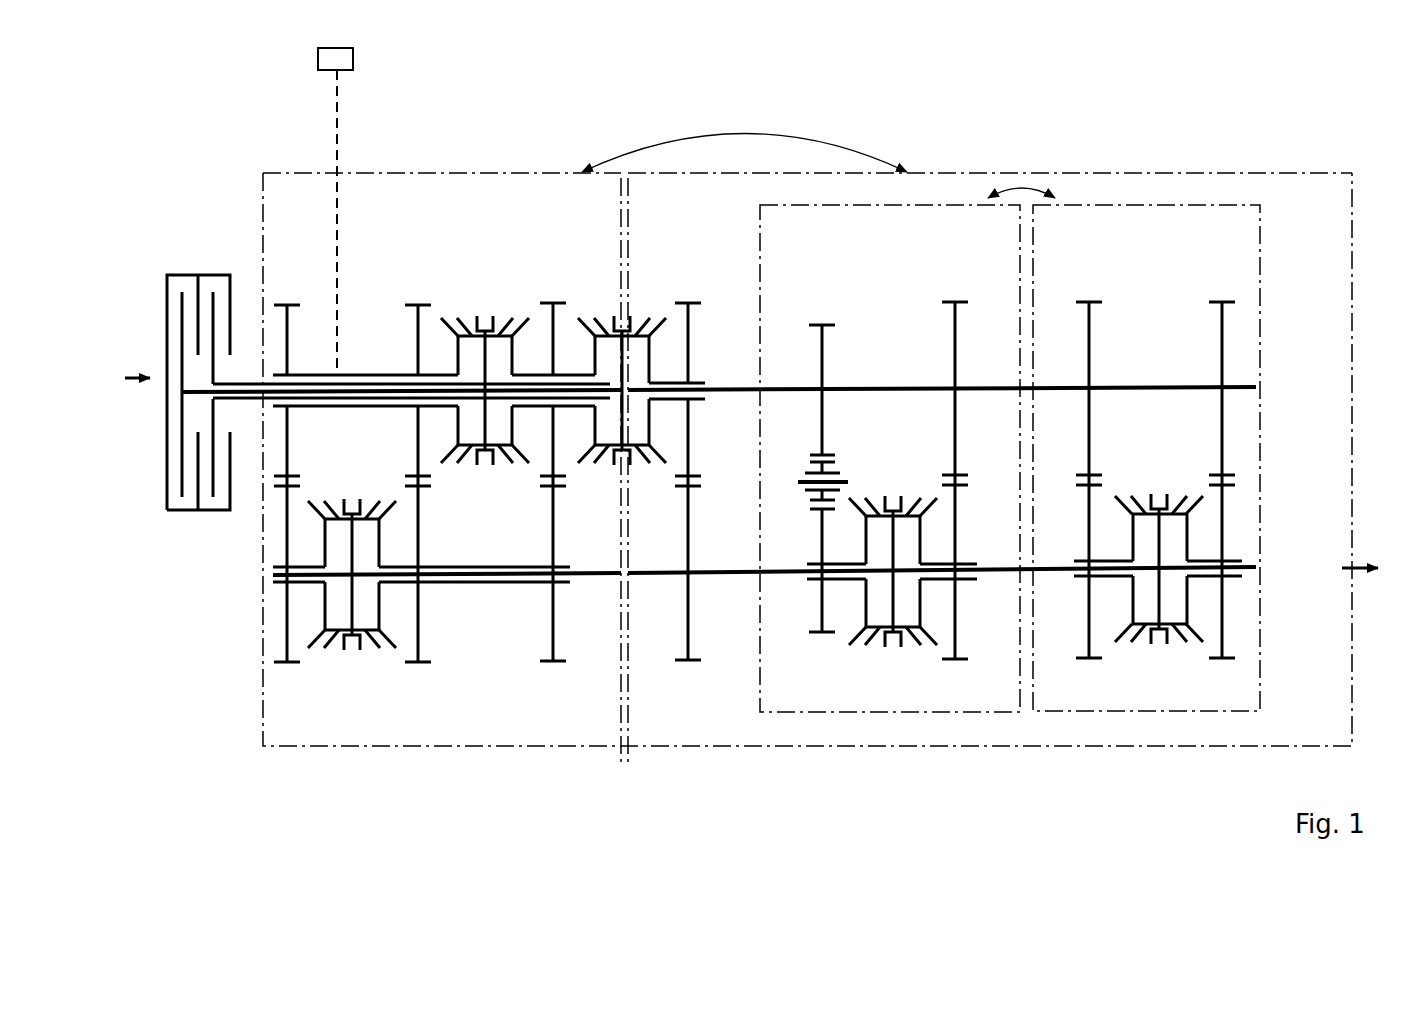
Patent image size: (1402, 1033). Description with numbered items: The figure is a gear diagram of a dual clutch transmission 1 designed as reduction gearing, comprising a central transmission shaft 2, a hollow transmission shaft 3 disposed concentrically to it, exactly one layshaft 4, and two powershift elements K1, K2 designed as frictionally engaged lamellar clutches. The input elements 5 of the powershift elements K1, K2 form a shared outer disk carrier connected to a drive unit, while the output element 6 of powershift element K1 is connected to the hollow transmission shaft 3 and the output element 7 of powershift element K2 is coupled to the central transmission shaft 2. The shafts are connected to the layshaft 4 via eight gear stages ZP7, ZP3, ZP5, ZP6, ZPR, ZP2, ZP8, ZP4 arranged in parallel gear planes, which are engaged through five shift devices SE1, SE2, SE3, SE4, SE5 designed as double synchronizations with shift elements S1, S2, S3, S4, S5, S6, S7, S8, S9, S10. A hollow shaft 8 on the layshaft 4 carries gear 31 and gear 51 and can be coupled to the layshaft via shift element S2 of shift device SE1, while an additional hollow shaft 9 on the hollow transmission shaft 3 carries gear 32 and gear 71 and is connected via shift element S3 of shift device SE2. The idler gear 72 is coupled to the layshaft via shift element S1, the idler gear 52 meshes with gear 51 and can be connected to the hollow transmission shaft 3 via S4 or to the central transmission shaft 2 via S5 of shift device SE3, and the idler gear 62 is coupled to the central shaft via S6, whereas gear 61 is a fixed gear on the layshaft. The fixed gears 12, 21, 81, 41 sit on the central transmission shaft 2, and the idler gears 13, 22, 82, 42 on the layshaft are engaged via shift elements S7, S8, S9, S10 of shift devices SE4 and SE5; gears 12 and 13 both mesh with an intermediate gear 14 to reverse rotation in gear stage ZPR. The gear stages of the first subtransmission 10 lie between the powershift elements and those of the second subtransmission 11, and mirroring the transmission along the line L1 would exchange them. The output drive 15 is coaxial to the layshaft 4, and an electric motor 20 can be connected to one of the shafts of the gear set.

The dual clutch transmission 1 is at (180, 165).
The central transmission shaft 2 is at (887, 386).
The hollow transmission shaft 3 is at (346, 388).
The layshaft 4 is at (735, 578).
The input elements of the powershift elements 5 is at (178, 512).
The output element of powershift element K1 6 is at (217, 297).
The output element of powershift element K2 7 is at (167, 297).
The hollow shaft 8 is at (492, 585).
The additional hollow shaft 9 is at (369, 381).
The first subtransmission 10 is at (448, 172).
The second subtransmission 11 is at (642, 172).
The gear of the gear stage ZPR 12 is at (813, 323).
The gear of the gear stage ZPR 13 is at (821, 635).
The intermediate gear 14 is at (836, 455).
The output drive 15 is at (1352, 563).
The electric motor 20 is at (355, 62).
The gear of the gear stage ZP2 21 is at (948, 302).
The gear of the gear stage ZP2 22 is at (965, 662).
The gear of the gear stage ZP3 31 is at (424, 665).
The additional gear of the gear stage ZP3 32 is at (410, 302).
The gear of the gear stage ZP4 41 is at (1233, 302).
The gear of the gear stage ZP4 42 is at (1233, 661).
The gear of the gear stage ZP5 51 is at (551, 664).
The second gear of the gear stage ZP5 52 is at (549, 302).
The gear of the gear stage ZP6 61 is at (686, 663).
The additional gear of the gear stage ZP6 62 is at (694, 303).
The gear of the gear stage ZP7 71 is at (293, 305).
The additional gear of the gear stage ZP7 72 is at (282, 665).
The gear of the gear stage ZP8 81 is at (1081, 302).
The gear of the gear stage ZP8 82 is at (1088, 661).
The powershift element K1 is at (208, 272).
The powershift element K2 is at (180, 272).
The line L1 is at (626, 770).
The gear stage ZP7 is at (280, 298).
The gear stage ZP3 is at (420, 298).
The gear stage ZP5 is at (557, 297).
The gear stage ZP6 is at (691, 297).
The gear stage ZPR is at (827, 318).
The gear stage ZP2 is at (960, 298).
The gear stage ZP8 is at (1094, 298).
The gear stage ZP4 is at (1222, 298).
The shift device SE1 is at (351, 662).
The shift device SE2 is at (486, 312).
The shift device SE3 is at (639, 289).
The shift device SE4 is at (894, 656).
The shift device SE5 is at (1160, 655).
The shift element S1 is at (322, 502).
The shift element S2 is at (385, 502).
The shift element S3 is at (450, 308).
The shift element S4 is at (521, 312).
The shift element S5 is at (586, 310).
The shift element S6 is at (660, 316).
The shift element S7 is at (865, 642).
The shift element S8 is at (923, 642).
The shift element S9 is at (1126, 498).
The shift element S10 is at (1192, 498).